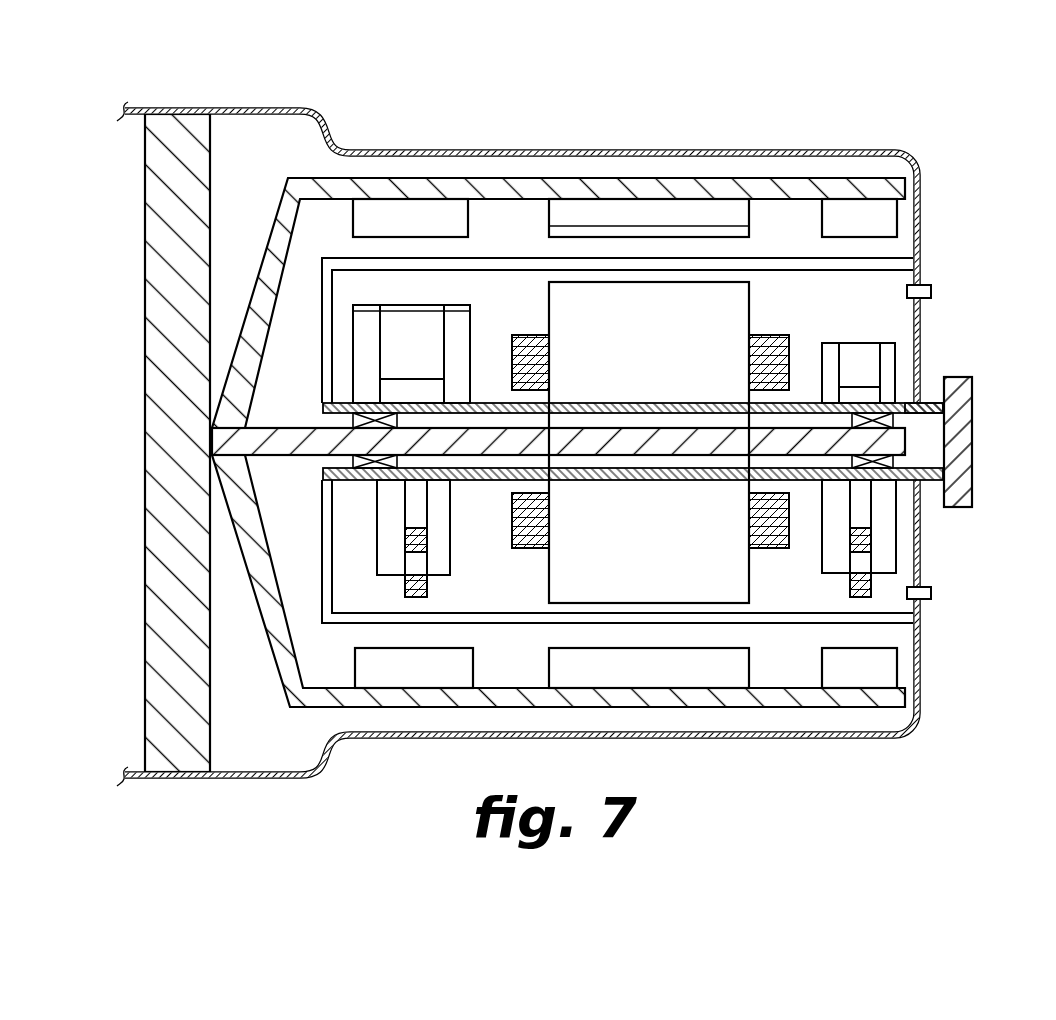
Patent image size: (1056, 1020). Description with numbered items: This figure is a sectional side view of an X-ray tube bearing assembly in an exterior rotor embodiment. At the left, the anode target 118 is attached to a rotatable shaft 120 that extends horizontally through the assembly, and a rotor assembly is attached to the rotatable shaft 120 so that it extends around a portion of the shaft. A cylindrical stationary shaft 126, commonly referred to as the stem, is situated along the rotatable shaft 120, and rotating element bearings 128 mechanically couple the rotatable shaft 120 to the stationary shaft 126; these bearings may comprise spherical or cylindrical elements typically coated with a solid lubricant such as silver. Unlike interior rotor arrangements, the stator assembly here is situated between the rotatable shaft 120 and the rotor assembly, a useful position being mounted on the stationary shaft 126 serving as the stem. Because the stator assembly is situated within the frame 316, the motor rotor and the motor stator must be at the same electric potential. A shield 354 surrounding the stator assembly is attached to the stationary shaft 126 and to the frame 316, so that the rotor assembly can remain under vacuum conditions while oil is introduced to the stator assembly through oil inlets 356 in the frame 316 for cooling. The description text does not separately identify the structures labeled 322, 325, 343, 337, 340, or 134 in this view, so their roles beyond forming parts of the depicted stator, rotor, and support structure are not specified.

The anode target 118 is at (145, 235).
The frame 316 is at (300, 108).
The end plate / conical support 322 is at (253, 275).
The stator winding 325 is at (605, 215).
The stator end winding 343 is at (850, 215).
The rotor 337 is at (684, 350).
The bearing 340 is at (845, 350).
The rotatable shaft 120 is at (800, 483).
The stationary shaft 126 is at (932, 394).
The rotating element bearings 128 is at (920, 463).
The disk 134 is at (966, 510).
The shield 354 is at (766, 613).
The oil inlets 356 is at (925, 600).